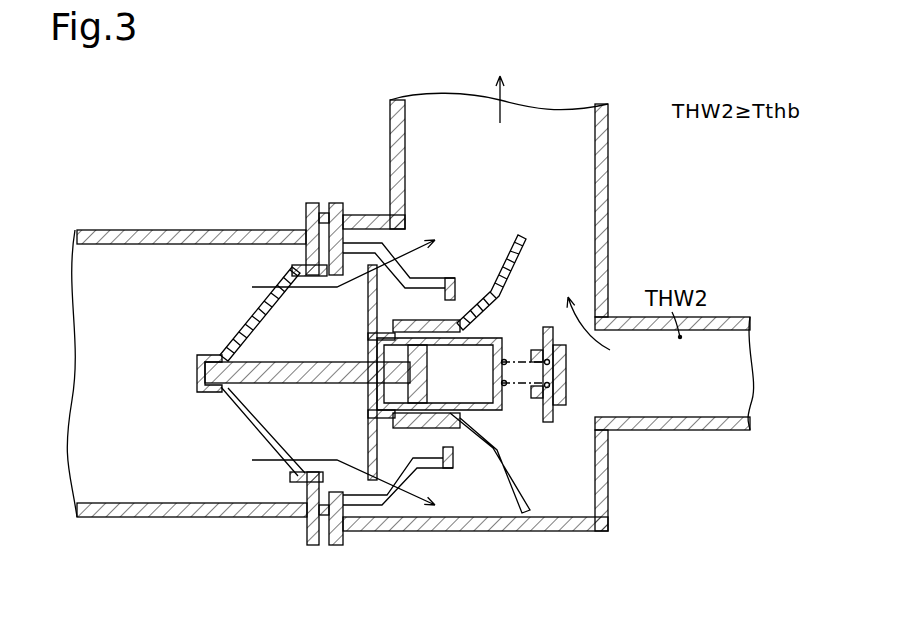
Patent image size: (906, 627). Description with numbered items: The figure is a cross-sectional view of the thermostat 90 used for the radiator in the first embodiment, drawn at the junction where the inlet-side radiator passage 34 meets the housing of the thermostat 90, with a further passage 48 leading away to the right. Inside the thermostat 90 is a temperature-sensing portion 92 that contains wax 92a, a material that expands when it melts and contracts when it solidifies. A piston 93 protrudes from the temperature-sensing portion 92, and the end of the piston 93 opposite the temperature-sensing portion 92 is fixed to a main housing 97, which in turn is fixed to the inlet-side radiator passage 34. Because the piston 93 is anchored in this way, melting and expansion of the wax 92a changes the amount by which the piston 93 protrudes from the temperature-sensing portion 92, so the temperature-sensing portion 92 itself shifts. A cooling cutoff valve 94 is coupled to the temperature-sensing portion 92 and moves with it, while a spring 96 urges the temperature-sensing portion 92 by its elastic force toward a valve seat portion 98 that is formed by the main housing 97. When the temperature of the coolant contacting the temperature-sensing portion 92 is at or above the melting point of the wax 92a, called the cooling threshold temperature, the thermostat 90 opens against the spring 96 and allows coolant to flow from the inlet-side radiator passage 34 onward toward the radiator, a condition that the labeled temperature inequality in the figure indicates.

The inlet-side radiator passage 34 is at (225, 500).
The outlet pipe 48 is at (700, 424).
The thermostat 90 is at (683, 180).
The temperature-sensing portion 92 is at (475, 332).
The wax 92a is at (439, 374).
The piston 93 is at (322, 384).
The cooling cutoff valve 94 is at (368, 330).
The spring 96 is at (505, 385).
The main housing 97 is at (238, 421).
The valve seat portion 98 is at (343, 262).